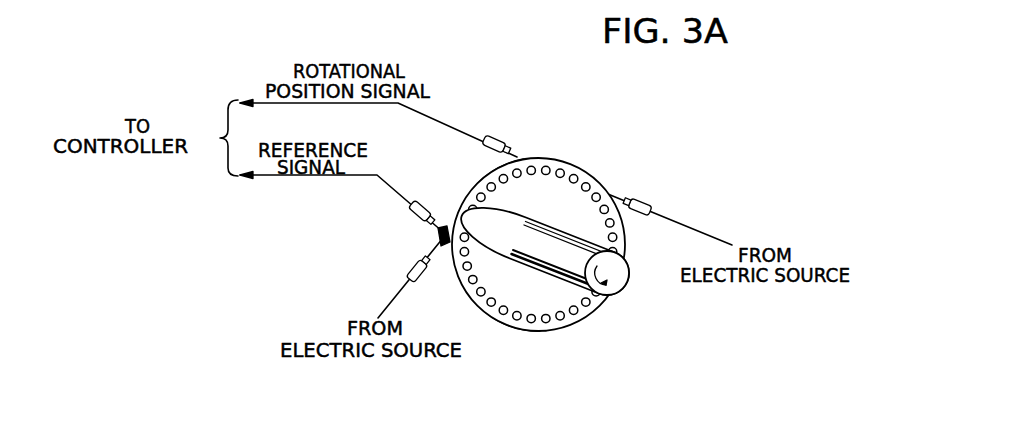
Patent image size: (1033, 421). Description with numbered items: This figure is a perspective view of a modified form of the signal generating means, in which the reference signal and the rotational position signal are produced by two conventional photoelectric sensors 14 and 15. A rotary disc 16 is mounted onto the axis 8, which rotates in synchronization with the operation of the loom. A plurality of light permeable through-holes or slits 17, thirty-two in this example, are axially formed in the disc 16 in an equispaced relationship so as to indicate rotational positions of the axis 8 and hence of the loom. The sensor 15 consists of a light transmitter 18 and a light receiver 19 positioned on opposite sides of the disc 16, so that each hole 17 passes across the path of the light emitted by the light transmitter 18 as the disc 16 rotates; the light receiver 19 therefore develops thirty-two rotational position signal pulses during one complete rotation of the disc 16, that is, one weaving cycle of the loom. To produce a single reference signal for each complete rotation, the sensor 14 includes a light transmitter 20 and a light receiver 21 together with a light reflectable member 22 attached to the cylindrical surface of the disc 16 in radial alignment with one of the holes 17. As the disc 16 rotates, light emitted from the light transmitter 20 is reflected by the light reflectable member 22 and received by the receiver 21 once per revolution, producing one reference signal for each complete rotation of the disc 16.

The axis 8 is at (625, 284).
The photoelectric sensor 14 is at (405, 250).
The photoelectric sensor 15 is at (632, 158).
The rotary disc 16 is at (530, 323).
The light permeable through-holes 17 is at (546, 166).
The light transmitter 18 is at (641, 202).
The light receiver 19 is at (496, 138).
The light transmitter 20 is at (421, 282).
The light receiver 21 is at (411, 213).
The light reflectable member 22 is at (449, 202).